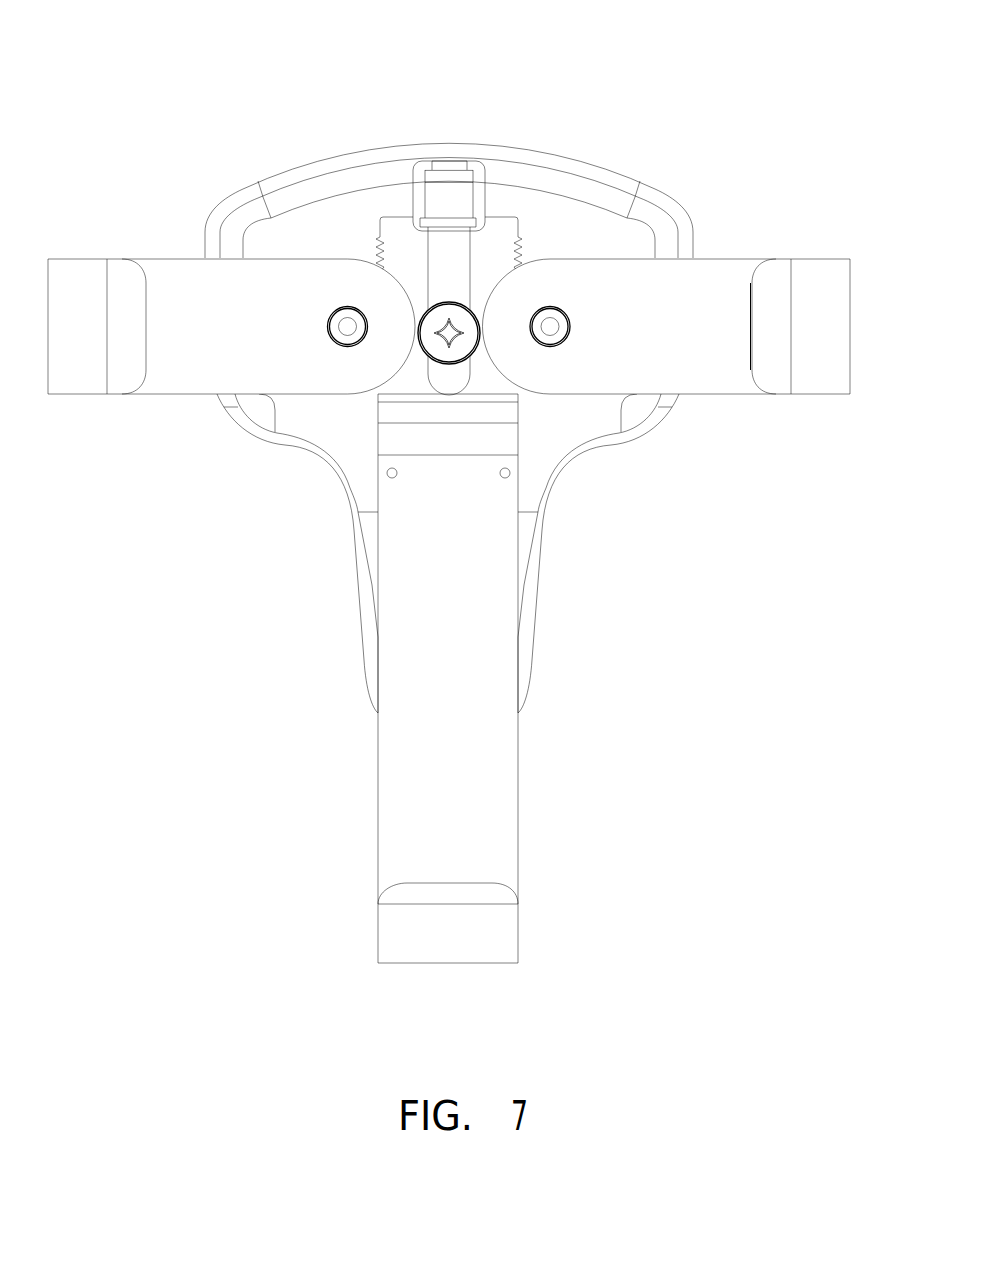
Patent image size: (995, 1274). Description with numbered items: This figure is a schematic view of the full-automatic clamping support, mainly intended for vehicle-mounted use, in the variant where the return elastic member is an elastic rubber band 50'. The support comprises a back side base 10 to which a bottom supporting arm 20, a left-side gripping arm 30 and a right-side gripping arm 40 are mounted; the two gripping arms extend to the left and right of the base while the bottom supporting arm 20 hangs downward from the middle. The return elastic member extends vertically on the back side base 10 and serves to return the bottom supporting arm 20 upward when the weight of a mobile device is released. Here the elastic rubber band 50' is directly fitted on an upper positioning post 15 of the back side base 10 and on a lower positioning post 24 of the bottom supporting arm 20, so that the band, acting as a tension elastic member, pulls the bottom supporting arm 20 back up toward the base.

The back side base 10 is at (590, 193).
The upper positioning post 15 is at (444, 165).
The bottom supporting arm 20 is at (462, 745).
The lower positioning post 24 is at (452, 218).
The left-side gripping arm 30 is at (200, 332).
The right-side gripping arm 40 is at (705, 370).
The elastic rubber band 50' is at (478, 130).